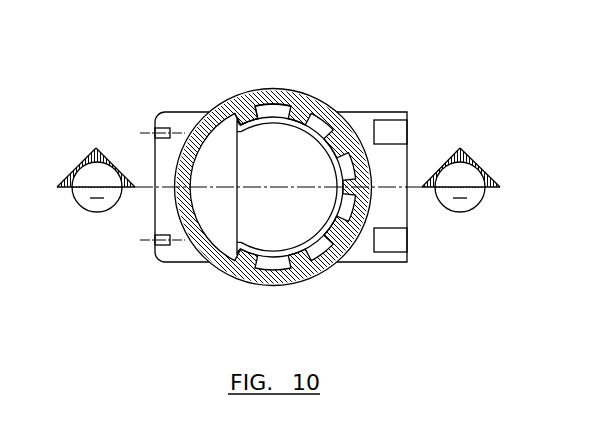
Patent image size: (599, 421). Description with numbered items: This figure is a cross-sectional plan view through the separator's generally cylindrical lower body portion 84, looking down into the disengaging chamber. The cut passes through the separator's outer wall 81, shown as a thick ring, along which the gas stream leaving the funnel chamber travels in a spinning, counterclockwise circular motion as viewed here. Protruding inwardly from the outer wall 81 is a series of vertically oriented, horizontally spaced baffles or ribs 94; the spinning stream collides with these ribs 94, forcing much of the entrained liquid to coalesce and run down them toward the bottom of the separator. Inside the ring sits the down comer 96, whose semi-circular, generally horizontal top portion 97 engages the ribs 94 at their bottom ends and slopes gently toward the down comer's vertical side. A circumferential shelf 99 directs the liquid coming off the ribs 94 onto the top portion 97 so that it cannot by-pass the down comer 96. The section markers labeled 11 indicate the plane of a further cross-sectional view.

The section line 11- 11 is at (278, 179).
The outer wall 81 is at (275, 169).
The lower body portion 84 is at (230, 283).
The ribs 94 is at (247, 104).
The down comer 96 is at (236, 141).
The top portion 97 is at (272, 197).
The circumferential shelf 99 is at (285, 105).